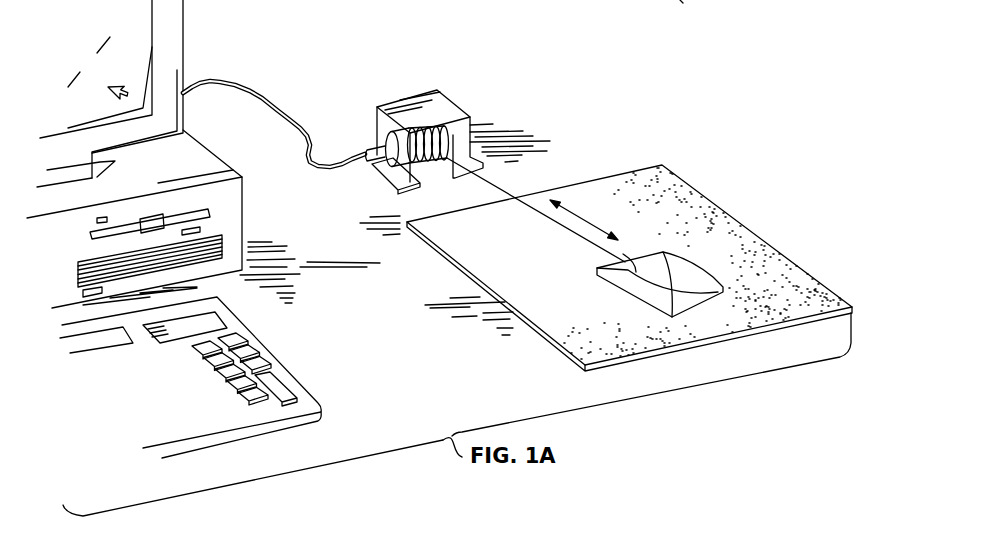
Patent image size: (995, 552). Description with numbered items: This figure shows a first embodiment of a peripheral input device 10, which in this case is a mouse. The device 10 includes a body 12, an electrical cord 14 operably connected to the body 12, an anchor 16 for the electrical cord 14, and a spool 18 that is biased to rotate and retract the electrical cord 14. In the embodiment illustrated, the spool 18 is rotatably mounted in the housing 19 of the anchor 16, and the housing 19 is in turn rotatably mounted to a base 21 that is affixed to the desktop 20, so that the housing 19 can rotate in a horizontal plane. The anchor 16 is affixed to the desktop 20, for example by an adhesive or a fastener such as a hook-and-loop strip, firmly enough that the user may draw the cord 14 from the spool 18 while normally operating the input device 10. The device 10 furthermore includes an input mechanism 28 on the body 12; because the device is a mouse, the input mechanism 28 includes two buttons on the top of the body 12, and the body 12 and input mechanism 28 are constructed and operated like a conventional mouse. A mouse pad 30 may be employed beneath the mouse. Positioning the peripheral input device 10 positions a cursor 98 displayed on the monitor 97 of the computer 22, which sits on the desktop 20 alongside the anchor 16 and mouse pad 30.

The peripheral input device 10 is at (548, 101).
The body 12 is at (668, 262).
The electrical cord 14 is at (213, 80).
The anchor 16 is at (393, 182).
The spool 18 is at (450, 130).
The housing 19 is at (400, 98).
The desktop 20 is at (352, 332).
The base 21 is at (502, 0).
The computer 22 is at (235, 190).
The input mechanism 28 is at (623, 262).
The mouse pad 30 is at (662, 167).
The monitor 97 is at (185, 21).
The cursor 98 is at (110, 100).